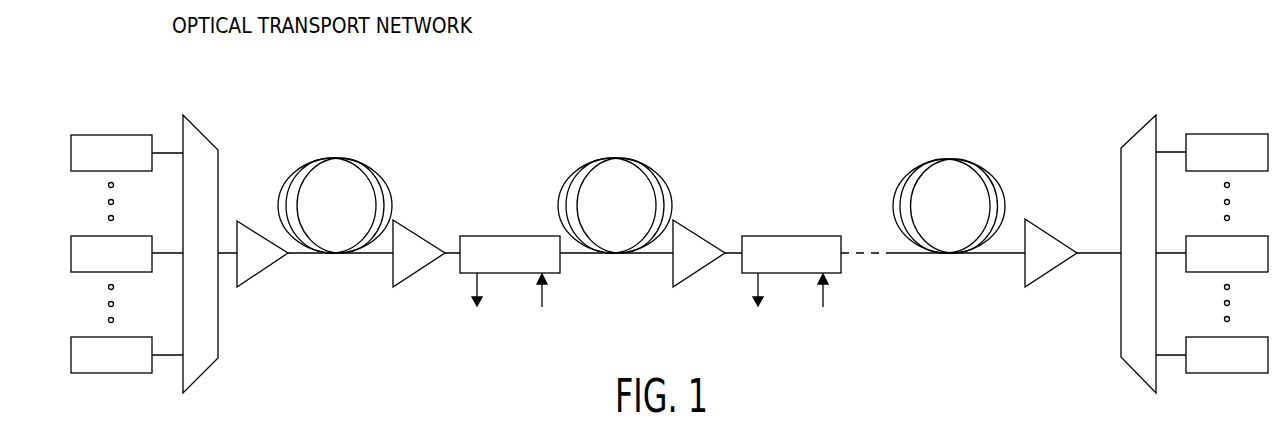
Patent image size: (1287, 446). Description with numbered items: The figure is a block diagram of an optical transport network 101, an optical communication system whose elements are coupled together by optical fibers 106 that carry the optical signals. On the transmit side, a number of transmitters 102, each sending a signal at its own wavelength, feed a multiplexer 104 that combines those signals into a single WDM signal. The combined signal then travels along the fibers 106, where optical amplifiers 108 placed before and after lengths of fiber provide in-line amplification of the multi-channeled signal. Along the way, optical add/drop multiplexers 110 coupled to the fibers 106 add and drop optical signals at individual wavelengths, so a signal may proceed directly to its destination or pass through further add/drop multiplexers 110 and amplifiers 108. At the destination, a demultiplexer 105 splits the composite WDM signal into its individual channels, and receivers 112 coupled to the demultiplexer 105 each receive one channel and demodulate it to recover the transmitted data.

The optical transport network 101 is at (143, 45).
The transmitter 102 is at (92, 135).
The multiplexer 104 is at (198, 126).
The demultiplexer 105 is at (1140, 130).
The optical fiber 106 is at (330, 158).
The optical amplifier 108 is at (259, 277).
The optical add/drop multiplexer 110 is at (497, 236).
The receiver 112 is at (1241, 134).